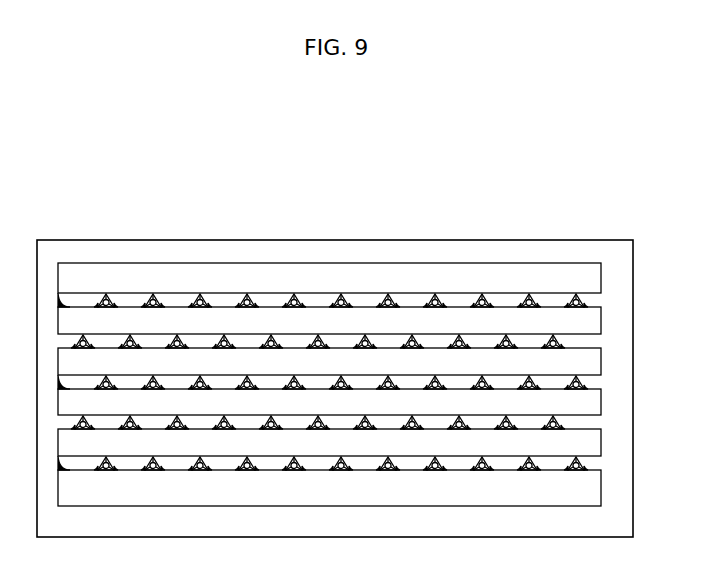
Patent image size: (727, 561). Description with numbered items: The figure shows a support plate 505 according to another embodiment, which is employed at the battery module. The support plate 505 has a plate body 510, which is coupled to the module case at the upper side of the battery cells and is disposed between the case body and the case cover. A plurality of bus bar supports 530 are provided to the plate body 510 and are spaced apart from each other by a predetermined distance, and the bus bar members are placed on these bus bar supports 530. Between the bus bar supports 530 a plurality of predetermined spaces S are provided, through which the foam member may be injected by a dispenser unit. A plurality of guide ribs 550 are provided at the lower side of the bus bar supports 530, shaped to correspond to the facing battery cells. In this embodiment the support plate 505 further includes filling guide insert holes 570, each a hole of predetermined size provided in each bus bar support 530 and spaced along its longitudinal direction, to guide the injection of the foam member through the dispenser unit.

The support plate 505 is at (100, 160).
The plate body 510 is at (230, 247).
The bus bar support 530 is at (178, 300).
The guide rib 550 is at (348, 296).
The filling guide insert hole 570 is at (293, 300).
The predetermined space S is at (406, 319).